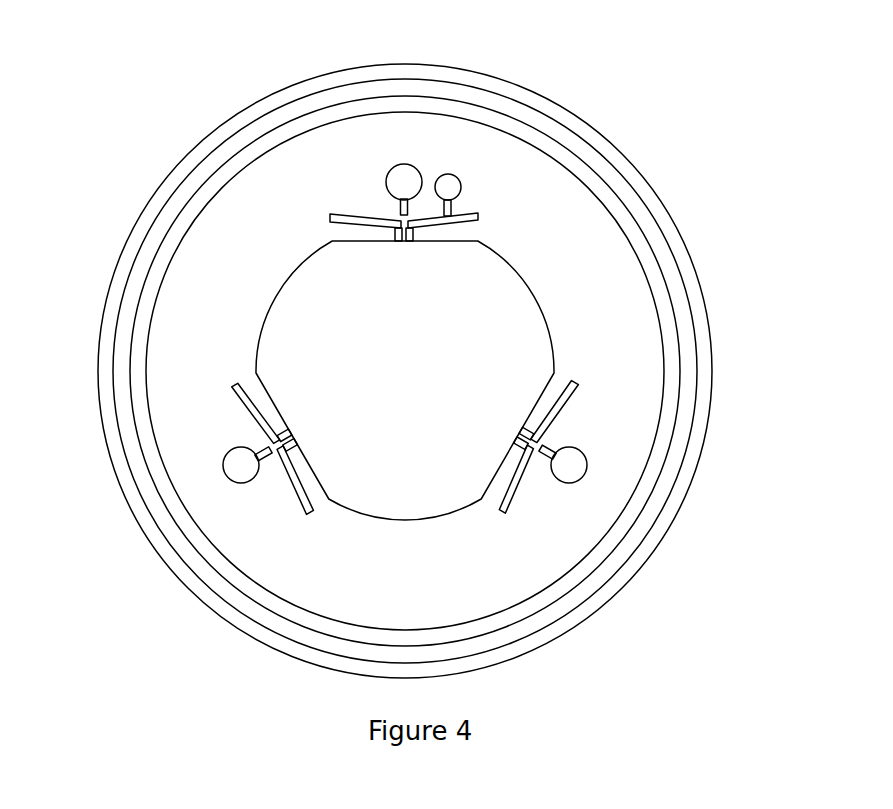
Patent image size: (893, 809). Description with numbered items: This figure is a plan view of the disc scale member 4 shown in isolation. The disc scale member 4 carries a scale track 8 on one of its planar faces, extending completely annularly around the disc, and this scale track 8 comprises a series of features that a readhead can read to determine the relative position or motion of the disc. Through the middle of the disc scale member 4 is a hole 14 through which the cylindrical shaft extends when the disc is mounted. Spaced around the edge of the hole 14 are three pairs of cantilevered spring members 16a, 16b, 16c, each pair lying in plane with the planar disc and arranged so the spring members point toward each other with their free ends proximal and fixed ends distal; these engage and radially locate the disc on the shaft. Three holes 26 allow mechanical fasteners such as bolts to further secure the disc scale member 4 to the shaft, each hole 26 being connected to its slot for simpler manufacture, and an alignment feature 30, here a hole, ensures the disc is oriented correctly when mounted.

The disc scale member 4 is at (663, 203).
The scale track 8 is at (500, 118).
The hole 14 is at (416, 384).
The pair of cantilevered spring members 16a is at (428, 233).
The pair of cantilevered spring members 16b is at (535, 422).
The pair of cantilevered spring members 16c is at (275, 423).
The hole 26 is at (398, 178).
The alignment feature 30 is at (447, 187).